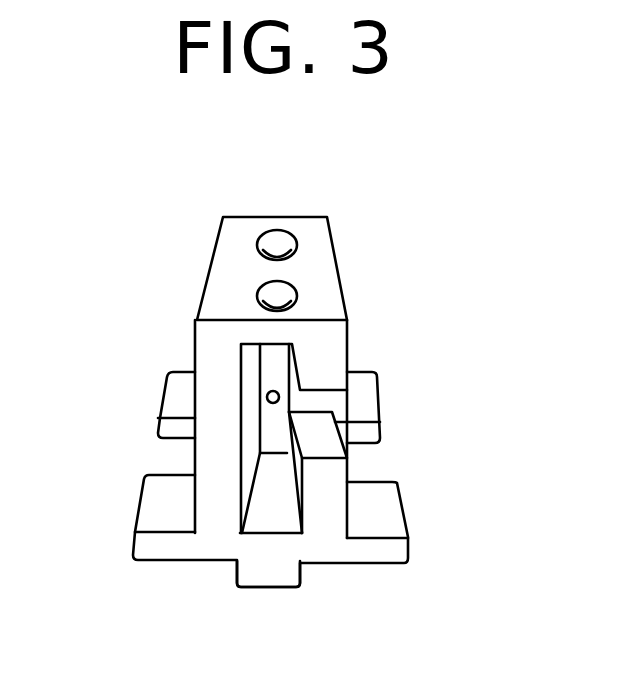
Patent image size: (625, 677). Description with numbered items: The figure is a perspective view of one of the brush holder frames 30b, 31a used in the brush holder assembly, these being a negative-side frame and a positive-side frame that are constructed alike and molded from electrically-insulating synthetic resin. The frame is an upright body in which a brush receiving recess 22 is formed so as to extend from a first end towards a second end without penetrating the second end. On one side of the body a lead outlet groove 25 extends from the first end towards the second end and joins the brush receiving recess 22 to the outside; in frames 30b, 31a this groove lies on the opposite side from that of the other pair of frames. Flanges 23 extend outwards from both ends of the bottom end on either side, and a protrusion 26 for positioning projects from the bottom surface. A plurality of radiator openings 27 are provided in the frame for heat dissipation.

The brush receiving recess 22 is at (272, 433).
The flanges 23 is at (160, 417).
The lead outlet groove 25 is at (310, 397).
The protrusions for positioning 26 is at (275, 567).
The radiator openings 27 is at (278, 250).
The negative-side brush holder frame 30b is at (380, 259).
The positive-side brush holder frame 31a is at (334, 243).